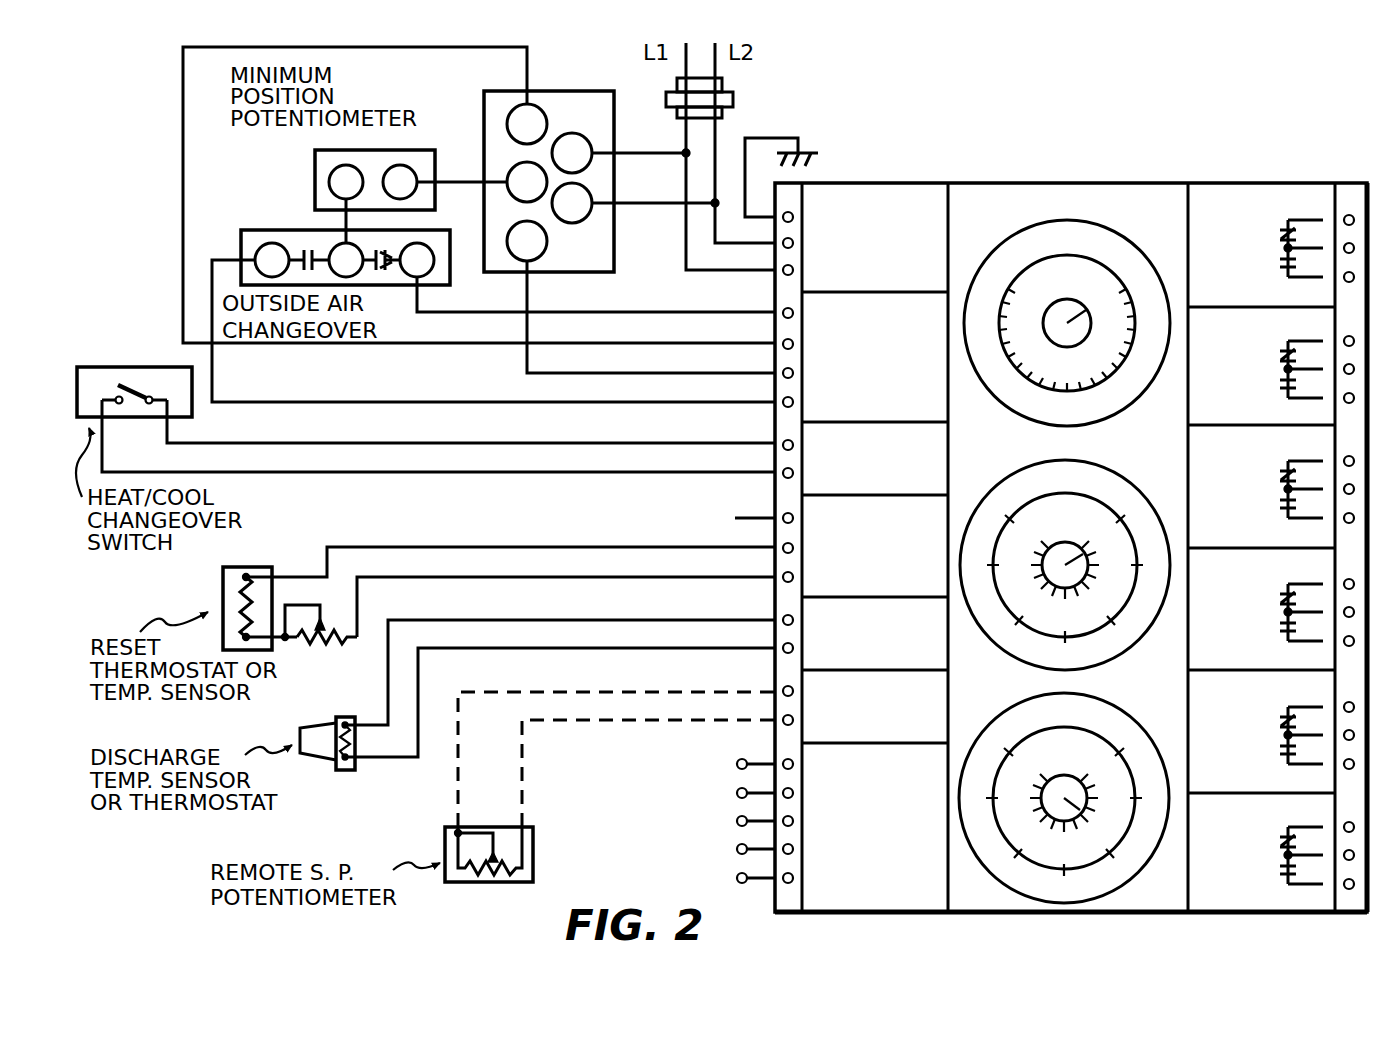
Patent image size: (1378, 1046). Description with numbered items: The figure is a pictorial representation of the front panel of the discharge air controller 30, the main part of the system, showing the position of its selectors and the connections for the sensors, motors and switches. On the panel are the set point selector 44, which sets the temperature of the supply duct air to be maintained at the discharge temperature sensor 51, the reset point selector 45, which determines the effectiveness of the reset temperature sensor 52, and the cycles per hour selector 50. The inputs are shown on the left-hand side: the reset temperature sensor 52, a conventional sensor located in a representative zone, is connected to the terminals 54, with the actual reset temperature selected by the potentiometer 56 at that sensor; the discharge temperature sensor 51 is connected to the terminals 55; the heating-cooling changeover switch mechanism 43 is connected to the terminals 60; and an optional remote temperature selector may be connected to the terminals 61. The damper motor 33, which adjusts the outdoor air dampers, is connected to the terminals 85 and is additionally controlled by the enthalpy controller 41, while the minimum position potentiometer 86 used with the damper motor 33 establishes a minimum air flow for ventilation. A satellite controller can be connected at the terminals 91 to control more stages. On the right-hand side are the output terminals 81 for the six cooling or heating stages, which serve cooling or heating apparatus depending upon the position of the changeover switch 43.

The discharge air controller 30 is at (1105, 183).
The damper motor 33 is at (558, 93).
The enthalpy controller 41 is at (282, 232).
The heating-cooling changeover switch mechanism 43 is at (157, 372).
The set point selector 44 is at (1052, 289).
The reset point selector 45 is at (1105, 512).
The cycles per hour selector 50 is at (1108, 745).
The discharge temperature sensor 51 is at (340, 715).
The reset temperature sensor 52 is at (256, 567).
The terminals 54 is at (742, 540).
The terminals 55 is at (762, 658).
The potentiometer 56 is at (330, 645).
The terminals 60 is at (762, 438).
The terminals 61 is at (762, 733).
The output terminals 81 is at (1348, 180).
The terminals 85 is at (765, 357).
The minimum position potentiometer 86 is at (315, 186).
The terminals 91 is at (735, 833).